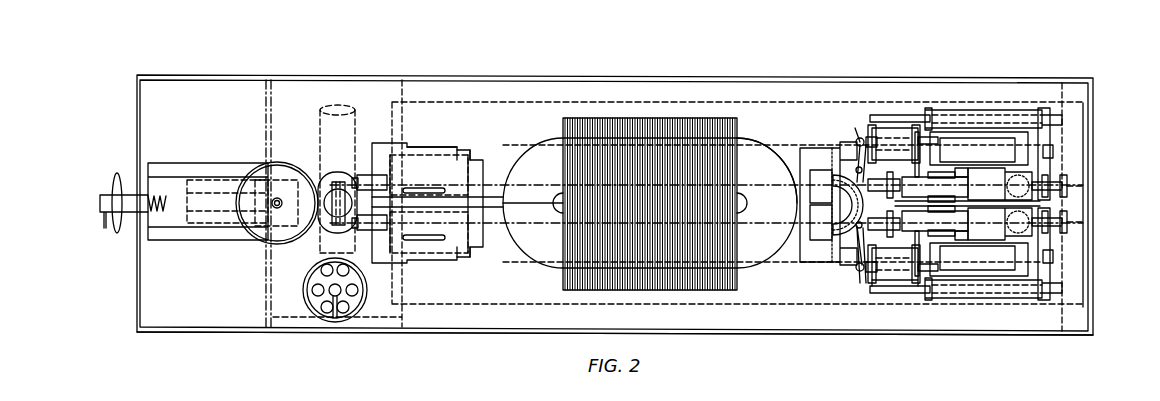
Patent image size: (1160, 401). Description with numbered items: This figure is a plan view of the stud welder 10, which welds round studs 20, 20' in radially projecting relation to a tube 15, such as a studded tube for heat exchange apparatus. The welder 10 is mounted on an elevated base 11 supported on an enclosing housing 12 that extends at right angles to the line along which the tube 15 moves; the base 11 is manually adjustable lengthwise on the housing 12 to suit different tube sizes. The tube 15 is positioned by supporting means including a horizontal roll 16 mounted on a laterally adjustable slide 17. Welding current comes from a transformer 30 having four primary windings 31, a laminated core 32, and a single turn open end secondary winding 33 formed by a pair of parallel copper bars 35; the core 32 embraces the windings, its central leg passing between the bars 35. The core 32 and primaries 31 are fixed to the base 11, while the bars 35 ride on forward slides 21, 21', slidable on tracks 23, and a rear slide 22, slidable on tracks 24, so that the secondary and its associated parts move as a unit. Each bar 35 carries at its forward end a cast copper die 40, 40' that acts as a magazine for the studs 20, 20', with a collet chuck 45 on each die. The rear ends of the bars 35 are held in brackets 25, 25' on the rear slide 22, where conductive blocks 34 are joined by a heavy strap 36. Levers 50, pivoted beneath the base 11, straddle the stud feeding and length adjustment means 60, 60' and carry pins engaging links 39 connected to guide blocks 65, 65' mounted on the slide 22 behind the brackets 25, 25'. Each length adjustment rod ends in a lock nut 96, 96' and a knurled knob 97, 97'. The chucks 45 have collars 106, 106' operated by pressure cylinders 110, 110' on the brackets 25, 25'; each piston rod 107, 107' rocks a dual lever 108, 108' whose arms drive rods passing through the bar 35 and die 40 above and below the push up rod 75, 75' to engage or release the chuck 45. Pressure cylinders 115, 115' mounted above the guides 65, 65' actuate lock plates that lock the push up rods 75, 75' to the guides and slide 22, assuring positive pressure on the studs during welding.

The stud welder 10 is at (552, 339).
The elevated base 11 is at (1080, 317).
The enclosing housing 12 is at (1012, 336).
The tube 15 is at (331, 105).
The horizontal roll 16 is at (263, 232).
The laterally adjustable slide 17 is at (212, 215).
The round stud 20 is at (337, 212).
The round stud 20' is at (370, 155).
The forward slide 21 is at (437, 218).
The forward slide 21' is at (444, 131).
The rear slide 22 is at (858, 284).
The tracks or blocks 23 is at (471, 150).
The tracks or blocks 24 is at (888, 294).
The bracket 25 is at (832, 296).
The bracket 25' is at (868, 113).
The transformer 30 is at (635, 291).
The primary windings 31 is at (748, 142).
The laminated core 32 is at (640, 118).
The single turn open end secondary winding 33 is at (515, 257).
The electrically conductive block 34 is at (812, 196).
The secondary winding bar 35 is at (791, 155).
The electrically conductive strap 36 is at (822, 242).
The link 39 is at (951, 196).
The die 40 is at (429, 251).
The die 40' is at (454, 202).
The collet chuck 45 is at (375, 178).
The lever 50 is at (943, 192).
The stud feeding and length adjustment means 60 is at (1086, 254).
The stud feeding and length adjustment means 60' is at (1087, 143).
The guide block 65 is at (981, 242).
The guide block 65' is at (981, 166).
The push up rod 75 is at (885, 216).
The push up rod 75' is at (884, 179).
The lock nut 96 is at (1087, 234).
The lock nut 96' is at (1085, 163).
The knurled operating knob 97 is at (1082, 224).
The knurled operating knob 97' is at (1082, 172).
The collar 106 is at (425, 226).
The collar 106' is at (427, 175).
The piston rod 107 is at (869, 317).
The piston rod 107' is at (898, 92).
The dual lever 108 is at (898, 255).
The dual lever 108' is at (903, 151).
The pressure cylinder 110 is at (966, 323).
The pressure cylinder 110' is at (966, 92).
The pressure cylinder 115 is at (1102, 212).
The pressure cylinder 115' is at (1108, 188).